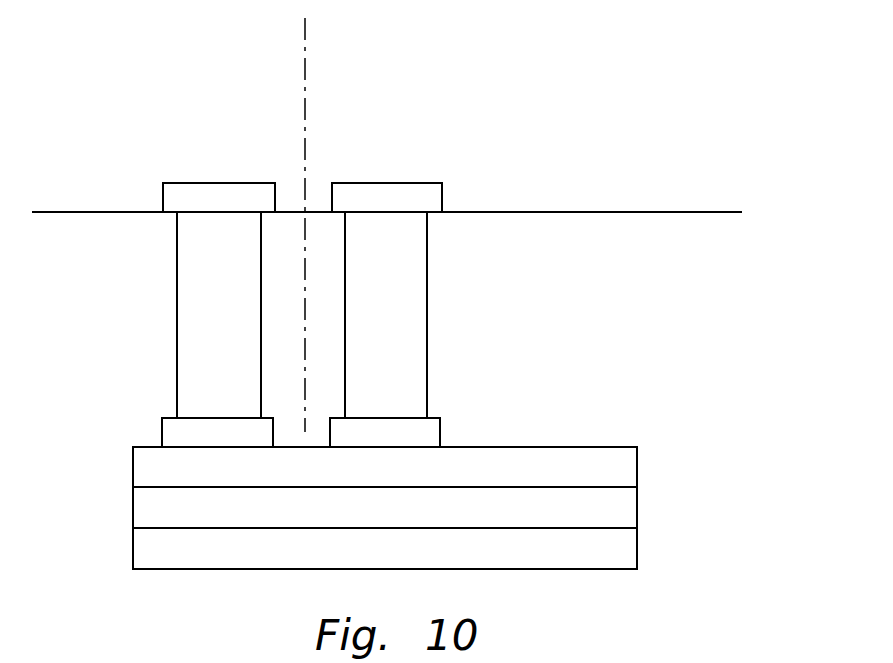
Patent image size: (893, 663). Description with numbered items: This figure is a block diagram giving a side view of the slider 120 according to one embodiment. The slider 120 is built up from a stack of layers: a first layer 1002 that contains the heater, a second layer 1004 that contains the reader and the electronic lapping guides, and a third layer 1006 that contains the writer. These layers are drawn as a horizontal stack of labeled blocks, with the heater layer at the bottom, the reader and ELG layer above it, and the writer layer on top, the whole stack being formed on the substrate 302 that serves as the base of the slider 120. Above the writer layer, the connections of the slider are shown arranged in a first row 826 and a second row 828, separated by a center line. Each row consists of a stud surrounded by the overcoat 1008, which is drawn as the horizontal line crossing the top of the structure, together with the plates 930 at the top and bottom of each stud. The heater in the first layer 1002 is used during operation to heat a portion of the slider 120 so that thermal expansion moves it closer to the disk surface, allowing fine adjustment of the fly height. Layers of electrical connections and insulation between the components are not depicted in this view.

The slider 120 is at (683, 59).
The substrate 302 is at (641, 471).
The first row 826 is at (222, 89).
The second row 828 is at (388, 89).
The plates 930 is at (220, 192).
The first layer 1002 is at (133, 542).
The second layer 1004 is at (133, 502).
The third layer 1006 is at (133, 461).
The overcoat 1008 is at (615, 225).